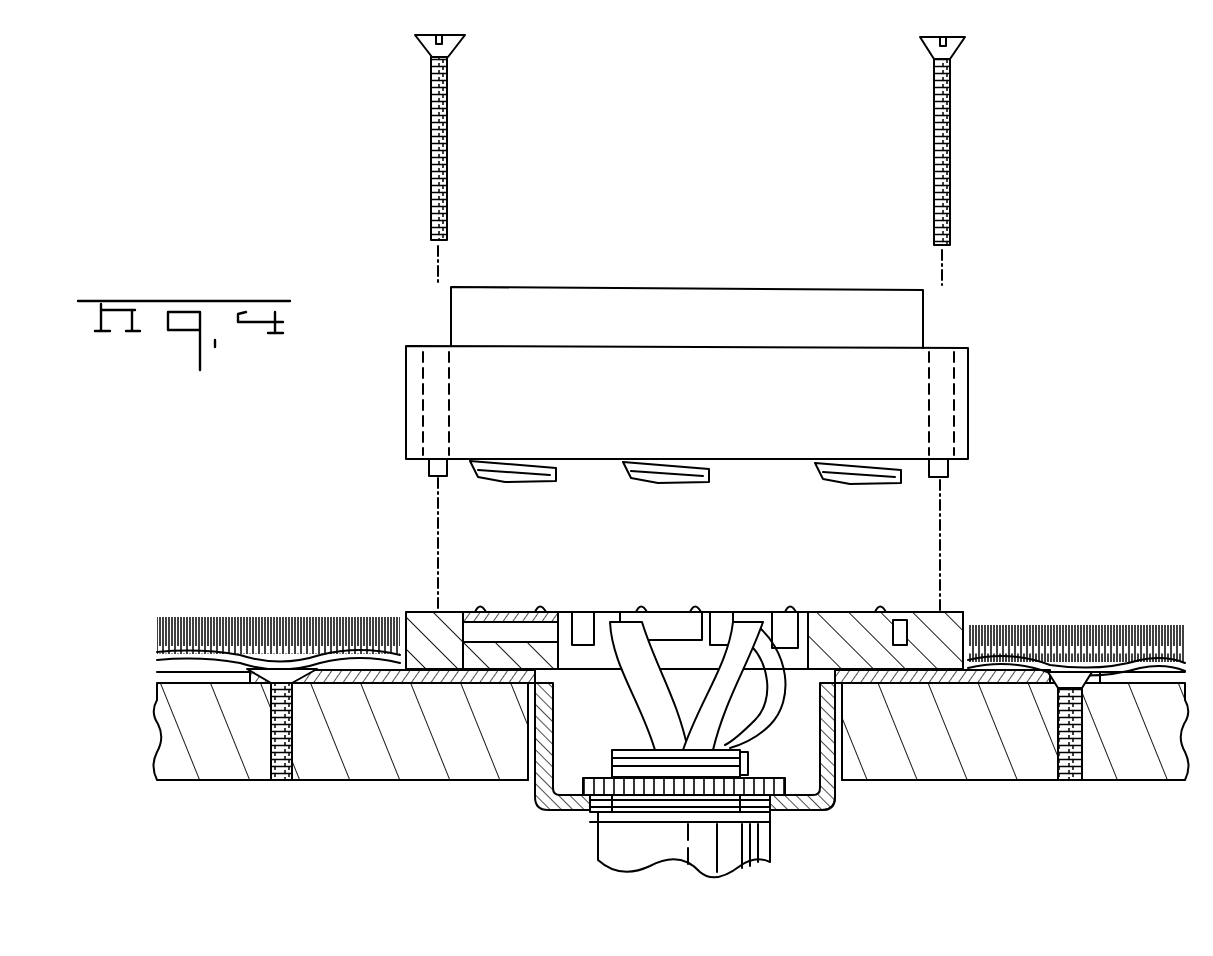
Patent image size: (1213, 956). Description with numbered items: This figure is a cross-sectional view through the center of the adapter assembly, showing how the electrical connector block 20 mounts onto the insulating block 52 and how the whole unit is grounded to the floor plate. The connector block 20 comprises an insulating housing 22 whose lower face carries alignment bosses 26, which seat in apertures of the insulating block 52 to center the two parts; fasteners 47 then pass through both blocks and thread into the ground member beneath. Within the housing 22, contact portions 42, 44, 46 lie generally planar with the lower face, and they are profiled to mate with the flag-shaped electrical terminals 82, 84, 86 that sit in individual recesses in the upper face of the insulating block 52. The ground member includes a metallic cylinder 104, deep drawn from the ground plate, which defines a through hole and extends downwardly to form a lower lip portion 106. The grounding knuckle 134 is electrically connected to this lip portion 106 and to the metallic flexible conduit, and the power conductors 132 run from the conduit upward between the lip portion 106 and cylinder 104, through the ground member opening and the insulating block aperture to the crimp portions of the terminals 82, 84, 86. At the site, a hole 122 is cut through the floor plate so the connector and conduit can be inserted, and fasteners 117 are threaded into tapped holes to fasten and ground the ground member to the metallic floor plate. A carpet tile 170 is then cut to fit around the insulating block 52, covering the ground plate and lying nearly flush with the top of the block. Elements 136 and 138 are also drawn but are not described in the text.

The electrical connector block 20 is at (725, 278).
The insulating housing 22 is at (912, 395).
The alignment bosses 26 is at (428, 470).
The contact portion 42 is at (507, 476).
The contact portion 44 is at (678, 476).
The contact portion 46 is at (862, 477).
The fasteners 47 is at (431, 87).
The insulating block 52 is at (963, 612).
The flag-shaped electrical terminal 82 is at (865, 612).
The flag-shaped electrical terminal 84 is at (663, 610).
The flag-shaped electrical terminal 86 is at (531, 610).
The cylinder 104 is at (840, 792).
The lower lip portion 106 is at (800, 816).
The fasteners 117 is at (285, 670).
The hole 122 is at (525, 745).
The power conductors 132 is at (675, 738).
The grounding knuckle 134 is at (615, 850).
The connector block 136 is at (612, 765).
The conduit nut 138 is at (585, 797).
The carpet tile 170 is at (268, 630).